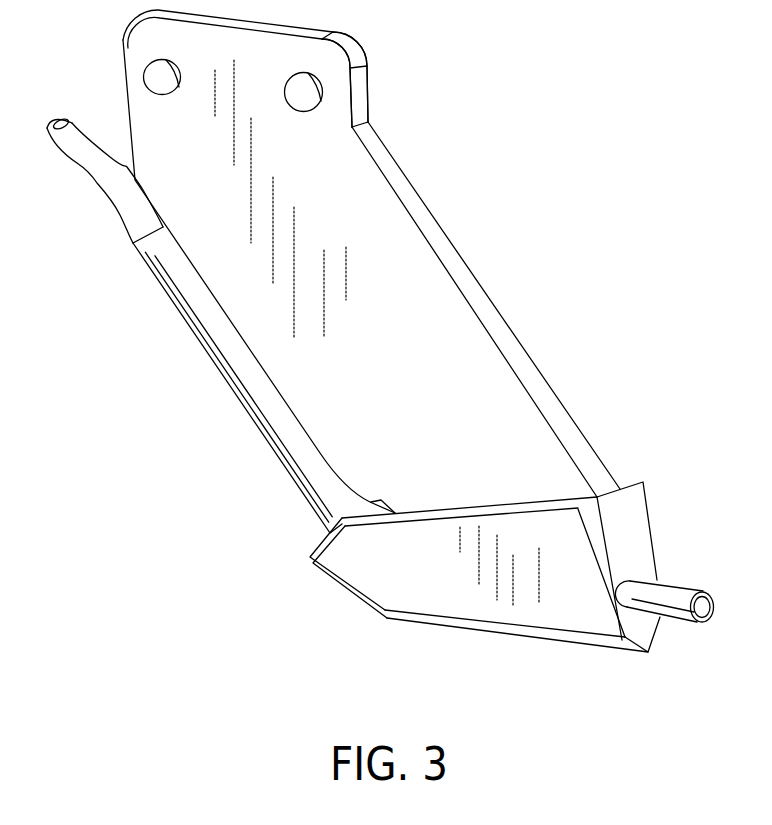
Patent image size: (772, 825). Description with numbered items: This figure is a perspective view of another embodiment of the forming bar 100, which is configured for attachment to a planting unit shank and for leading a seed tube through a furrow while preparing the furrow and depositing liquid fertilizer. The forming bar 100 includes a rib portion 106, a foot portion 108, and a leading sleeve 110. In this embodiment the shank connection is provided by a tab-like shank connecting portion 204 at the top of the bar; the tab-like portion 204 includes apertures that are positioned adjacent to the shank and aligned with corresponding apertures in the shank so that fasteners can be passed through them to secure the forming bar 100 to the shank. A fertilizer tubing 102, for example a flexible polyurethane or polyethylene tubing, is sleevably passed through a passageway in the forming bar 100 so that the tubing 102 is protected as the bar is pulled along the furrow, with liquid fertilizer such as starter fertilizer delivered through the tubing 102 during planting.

The forming bar 100 is at (645, 108).
The fertilizer tubing 102 is at (76, 171).
The rib portion 106 is at (486, 263).
The foot portion 108 is at (680, 512).
The leading sleeve 110 is at (211, 358).
The tab-like shank connecting portion 204 is at (367, 88).